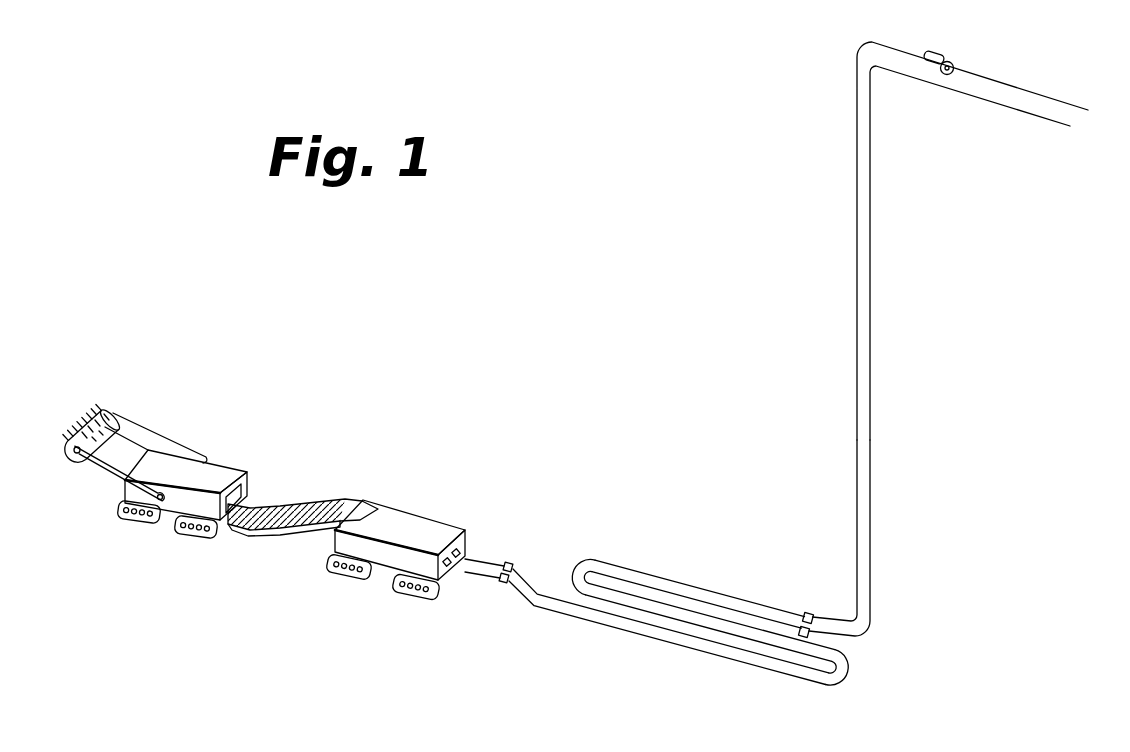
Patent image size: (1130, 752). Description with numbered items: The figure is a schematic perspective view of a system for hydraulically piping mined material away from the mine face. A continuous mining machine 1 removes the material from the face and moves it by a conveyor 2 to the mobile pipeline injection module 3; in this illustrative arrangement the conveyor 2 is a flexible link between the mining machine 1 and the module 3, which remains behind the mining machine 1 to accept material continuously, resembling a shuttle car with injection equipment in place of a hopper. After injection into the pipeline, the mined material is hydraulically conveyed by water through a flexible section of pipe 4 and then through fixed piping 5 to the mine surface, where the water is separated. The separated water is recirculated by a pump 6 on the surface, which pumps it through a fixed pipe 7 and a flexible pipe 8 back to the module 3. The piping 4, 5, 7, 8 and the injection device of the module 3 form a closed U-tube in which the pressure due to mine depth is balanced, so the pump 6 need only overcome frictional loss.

The continuous mining machine 1 is at (224, 455).
The conveyor 2 is at (297, 506).
The mobile pipeline injection module 3 is at (410, 517).
The flexible section of pipe 4 is at (847, 670).
The fixed piping 5 is at (872, 376).
The pump 6 is at (951, 62).
The fixed pipe 7 is at (857, 503).
The flexible pipe 8 is at (581, 560).